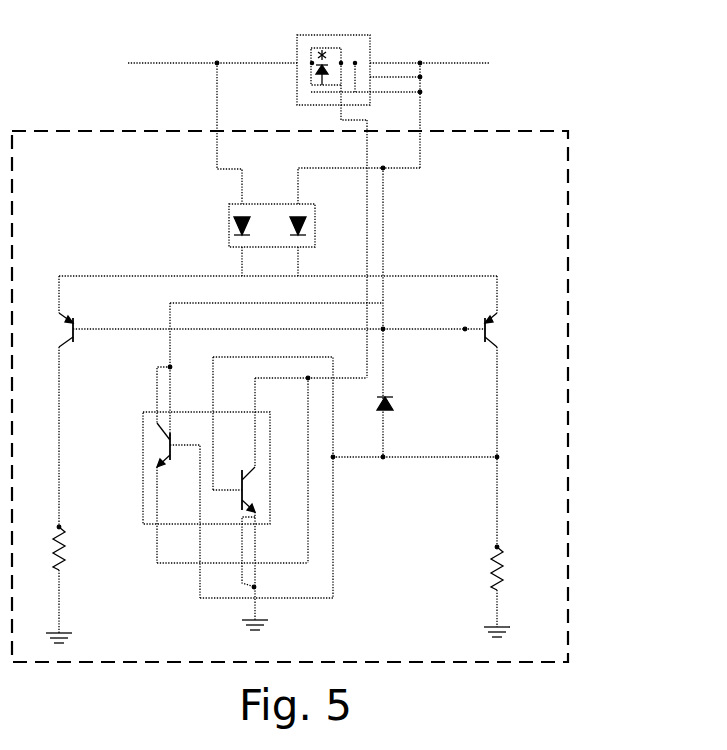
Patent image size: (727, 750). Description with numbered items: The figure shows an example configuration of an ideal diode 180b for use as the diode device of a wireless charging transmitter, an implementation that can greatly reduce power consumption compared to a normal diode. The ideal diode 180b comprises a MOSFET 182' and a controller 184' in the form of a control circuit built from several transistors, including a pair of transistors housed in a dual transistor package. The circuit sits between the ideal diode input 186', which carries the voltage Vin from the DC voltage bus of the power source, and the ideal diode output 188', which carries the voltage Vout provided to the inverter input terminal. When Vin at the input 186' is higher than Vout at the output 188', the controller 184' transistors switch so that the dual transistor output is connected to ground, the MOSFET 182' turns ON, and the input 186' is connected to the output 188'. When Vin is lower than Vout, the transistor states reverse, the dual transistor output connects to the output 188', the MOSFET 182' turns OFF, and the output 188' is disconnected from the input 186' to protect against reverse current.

The ideal diode input 186' is at (182, 81).
The ideal diode output 188' is at (478, 78).
The MOSFET 182' is at (397, 101).
The ideal diode 180b is at (353, 336).
The controller 184' is at (340, 361).